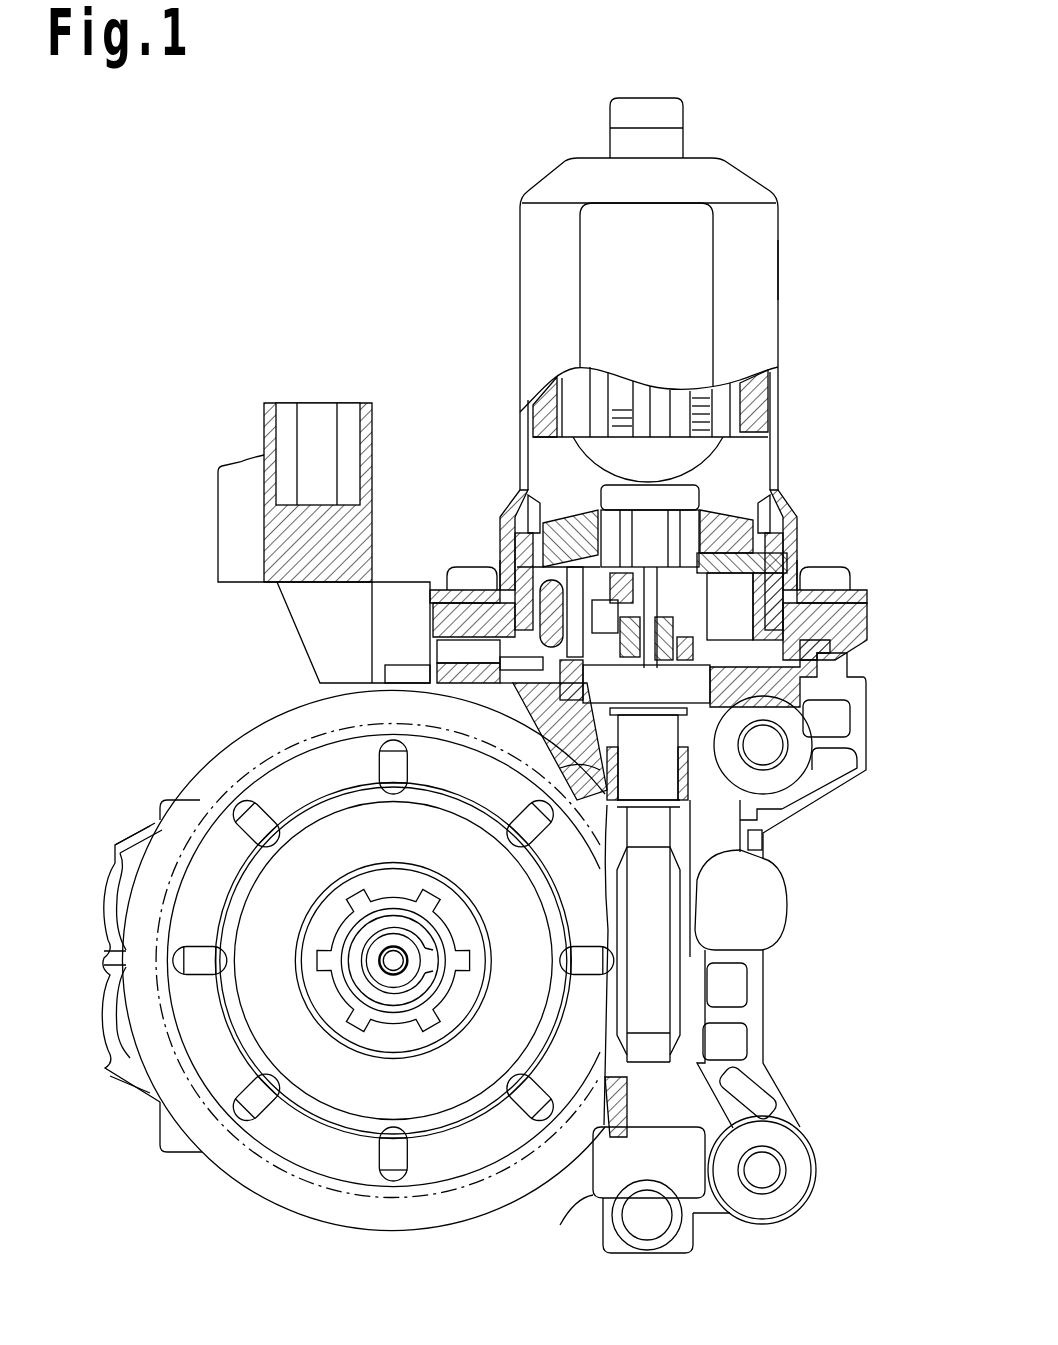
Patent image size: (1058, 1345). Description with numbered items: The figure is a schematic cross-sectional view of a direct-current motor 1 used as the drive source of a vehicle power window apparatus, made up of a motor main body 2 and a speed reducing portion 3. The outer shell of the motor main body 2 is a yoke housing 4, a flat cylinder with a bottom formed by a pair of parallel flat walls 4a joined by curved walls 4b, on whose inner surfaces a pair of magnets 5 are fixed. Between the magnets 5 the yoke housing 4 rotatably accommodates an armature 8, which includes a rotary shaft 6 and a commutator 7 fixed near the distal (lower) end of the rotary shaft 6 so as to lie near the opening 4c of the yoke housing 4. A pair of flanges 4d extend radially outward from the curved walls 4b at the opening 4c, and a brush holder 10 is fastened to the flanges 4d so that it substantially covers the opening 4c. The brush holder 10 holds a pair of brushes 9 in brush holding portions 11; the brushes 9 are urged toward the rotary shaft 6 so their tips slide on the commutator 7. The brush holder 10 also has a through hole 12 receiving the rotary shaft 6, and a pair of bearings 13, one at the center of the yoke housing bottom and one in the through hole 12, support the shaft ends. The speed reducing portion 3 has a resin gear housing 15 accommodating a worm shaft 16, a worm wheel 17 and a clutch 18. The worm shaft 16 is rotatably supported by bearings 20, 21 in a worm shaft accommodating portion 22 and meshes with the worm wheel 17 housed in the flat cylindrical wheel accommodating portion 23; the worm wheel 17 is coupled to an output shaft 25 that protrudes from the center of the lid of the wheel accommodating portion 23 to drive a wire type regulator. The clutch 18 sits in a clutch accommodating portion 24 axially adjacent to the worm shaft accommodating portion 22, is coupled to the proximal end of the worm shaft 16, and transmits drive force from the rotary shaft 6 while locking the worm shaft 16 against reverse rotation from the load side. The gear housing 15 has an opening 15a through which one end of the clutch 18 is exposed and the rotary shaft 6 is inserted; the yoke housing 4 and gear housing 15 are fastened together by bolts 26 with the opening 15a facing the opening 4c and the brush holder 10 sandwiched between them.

The direct-current motor 1 is at (483, 118).
The motor main body 2 is at (748, 173).
The speed reducing portion 3 is at (197, 773).
The yoke housing 4 is at (776, 232).
The flat walls 4a is at (636, 208).
The curved walls 4b is at (782, 270).
The opening 4c is at (500, 563).
The flanges 4d is at (427, 605).
The magnets 5 is at (545, 415).
The rotary shaft 6 is at (652, 575).
The commutator 7 is at (633, 523).
The armature 8 is at (614, 383).
The brushes 9 is at (596, 530).
The brush holder 10 is at (740, 475).
The brush holding portions 11 is at (537, 512).
The through hole 12 is at (690, 610).
The bearings 13 is at (615, 615).
The gear housing 15 is at (815, 795).
The opening 15a is at (512, 706).
The worm shaft 16 is at (657, 828).
The worm wheel 17 is at (340, 1210).
The clutch 18 is at (648, 700).
The bearing 20 is at (560, 768).
The bearing 21 is at (632, 1130).
The worm shaft accommodating portion 22 is at (603, 1210).
The wheel accommodating portion 23 is at (420, 1210).
The clutch accommodating portion 24 is at (570, 740).
The output shaft 25 is at (392, 938).
The bolts 26 is at (443, 585).